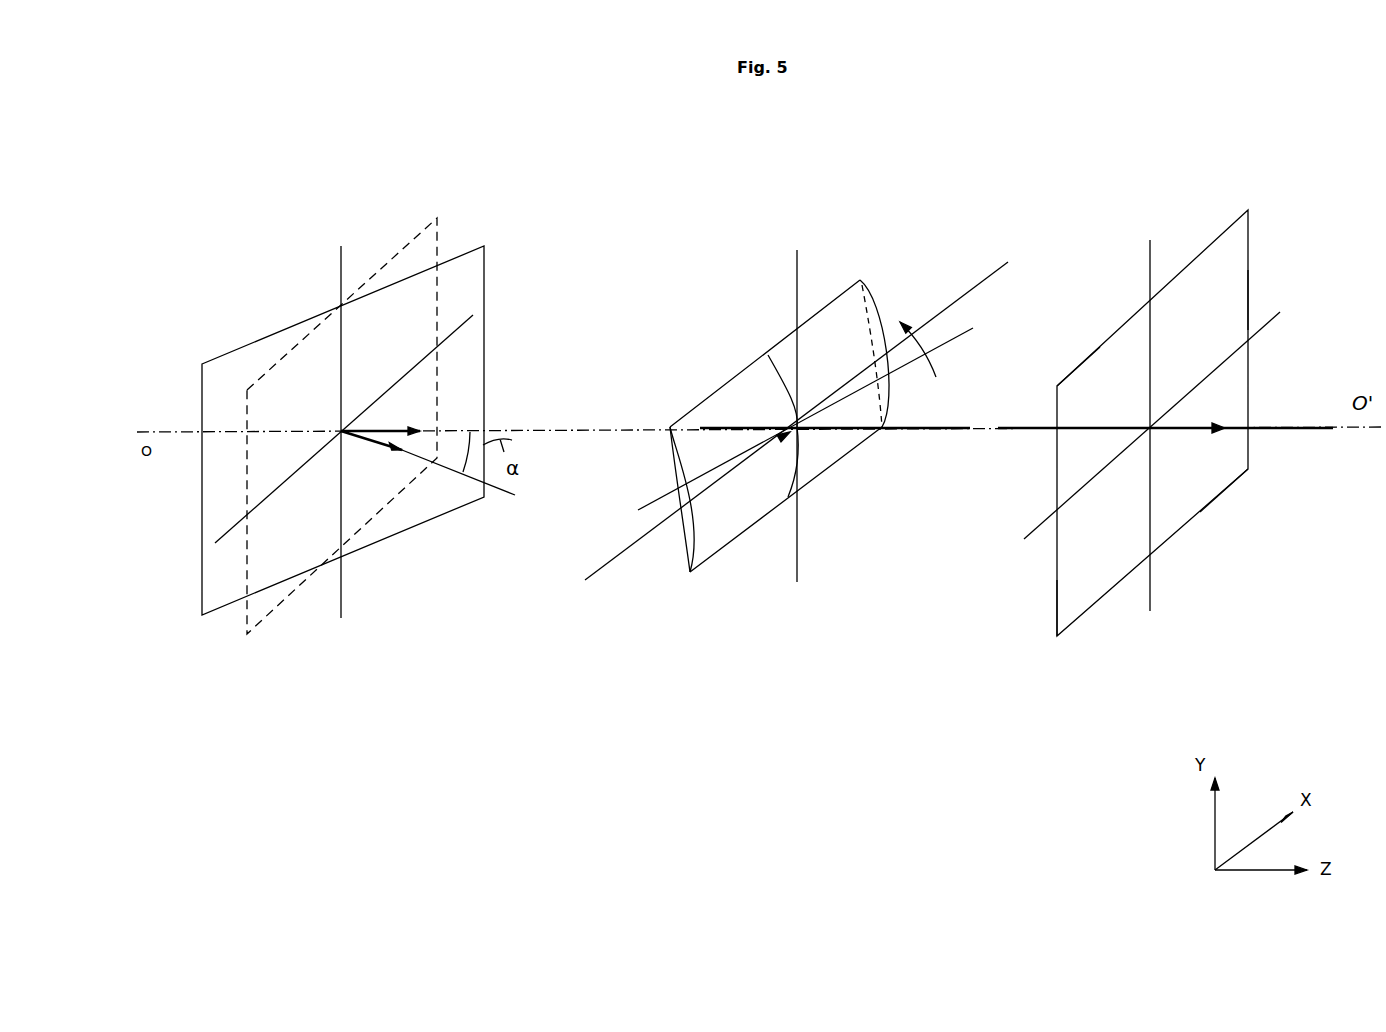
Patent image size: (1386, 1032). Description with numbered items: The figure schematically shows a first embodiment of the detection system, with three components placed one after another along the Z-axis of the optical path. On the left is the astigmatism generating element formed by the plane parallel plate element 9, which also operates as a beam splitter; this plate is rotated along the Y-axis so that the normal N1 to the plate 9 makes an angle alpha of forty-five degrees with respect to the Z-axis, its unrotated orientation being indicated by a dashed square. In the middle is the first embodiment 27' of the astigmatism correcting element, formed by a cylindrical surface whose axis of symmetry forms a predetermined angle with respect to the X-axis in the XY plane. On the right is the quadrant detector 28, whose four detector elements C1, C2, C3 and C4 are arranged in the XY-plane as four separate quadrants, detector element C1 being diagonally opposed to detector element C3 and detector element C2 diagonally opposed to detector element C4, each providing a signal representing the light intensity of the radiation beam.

The plane parallel plate element 9 is at (262, 338).
The first embodiment of the astigmatism correcting element 27' is at (796, 432).
The quadrant detector 28 is at (1204, 225).
The normal to the plate N1 is at (402, 450).
The detector element C1 is at (1229, 300).
The detector element C2 is at (1089, 382).
The detector element C3 is at (1079, 573).
The detector element C4 is at (1195, 494).